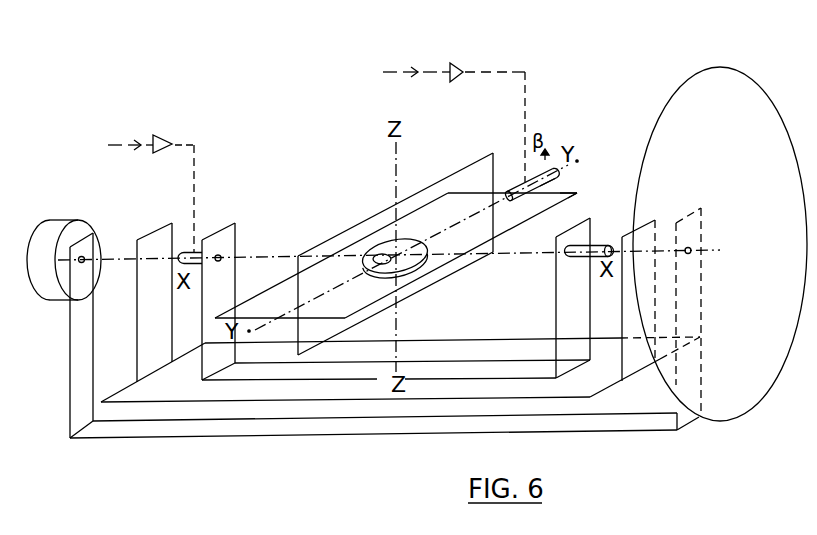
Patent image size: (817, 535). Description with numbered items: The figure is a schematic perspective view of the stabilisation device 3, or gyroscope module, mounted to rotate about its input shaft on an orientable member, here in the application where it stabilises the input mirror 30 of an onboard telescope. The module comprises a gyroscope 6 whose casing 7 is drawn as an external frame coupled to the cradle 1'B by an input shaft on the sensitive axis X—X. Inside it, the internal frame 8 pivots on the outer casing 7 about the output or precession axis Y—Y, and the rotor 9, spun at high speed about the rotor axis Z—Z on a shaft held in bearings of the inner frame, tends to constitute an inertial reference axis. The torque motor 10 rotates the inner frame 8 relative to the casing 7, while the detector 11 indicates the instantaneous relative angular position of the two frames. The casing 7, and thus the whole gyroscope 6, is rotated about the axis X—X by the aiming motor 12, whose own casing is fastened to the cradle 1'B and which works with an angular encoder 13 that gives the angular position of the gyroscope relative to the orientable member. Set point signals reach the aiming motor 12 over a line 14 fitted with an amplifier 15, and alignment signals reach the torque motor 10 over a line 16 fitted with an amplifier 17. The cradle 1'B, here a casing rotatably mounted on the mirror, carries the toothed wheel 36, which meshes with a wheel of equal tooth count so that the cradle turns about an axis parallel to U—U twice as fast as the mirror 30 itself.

The cradle 1'B is at (400, 408).
The stabilisation device 3 is at (338, 200).
The gyroscope 6 is at (448, 285).
The casing 7 is at (574, 196).
The internal frame 8 is at (457, 171).
The rotor 9 is at (398, 258).
The torque motor 10 is at (511, 190).
The detector 11 is at (560, 177).
The aiming motor 12 is at (190, 250).
The angular encoder 13 is at (609, 219).
The line 14 is at (197, 152).
The amplifier 15 is at (165, 133).
The line 16 is at (515, 71).
The amplifier 17 is at (456, 63).
The input mirror 30 is at (85, 439).
The toothed wheel 36 is at (746, 74).